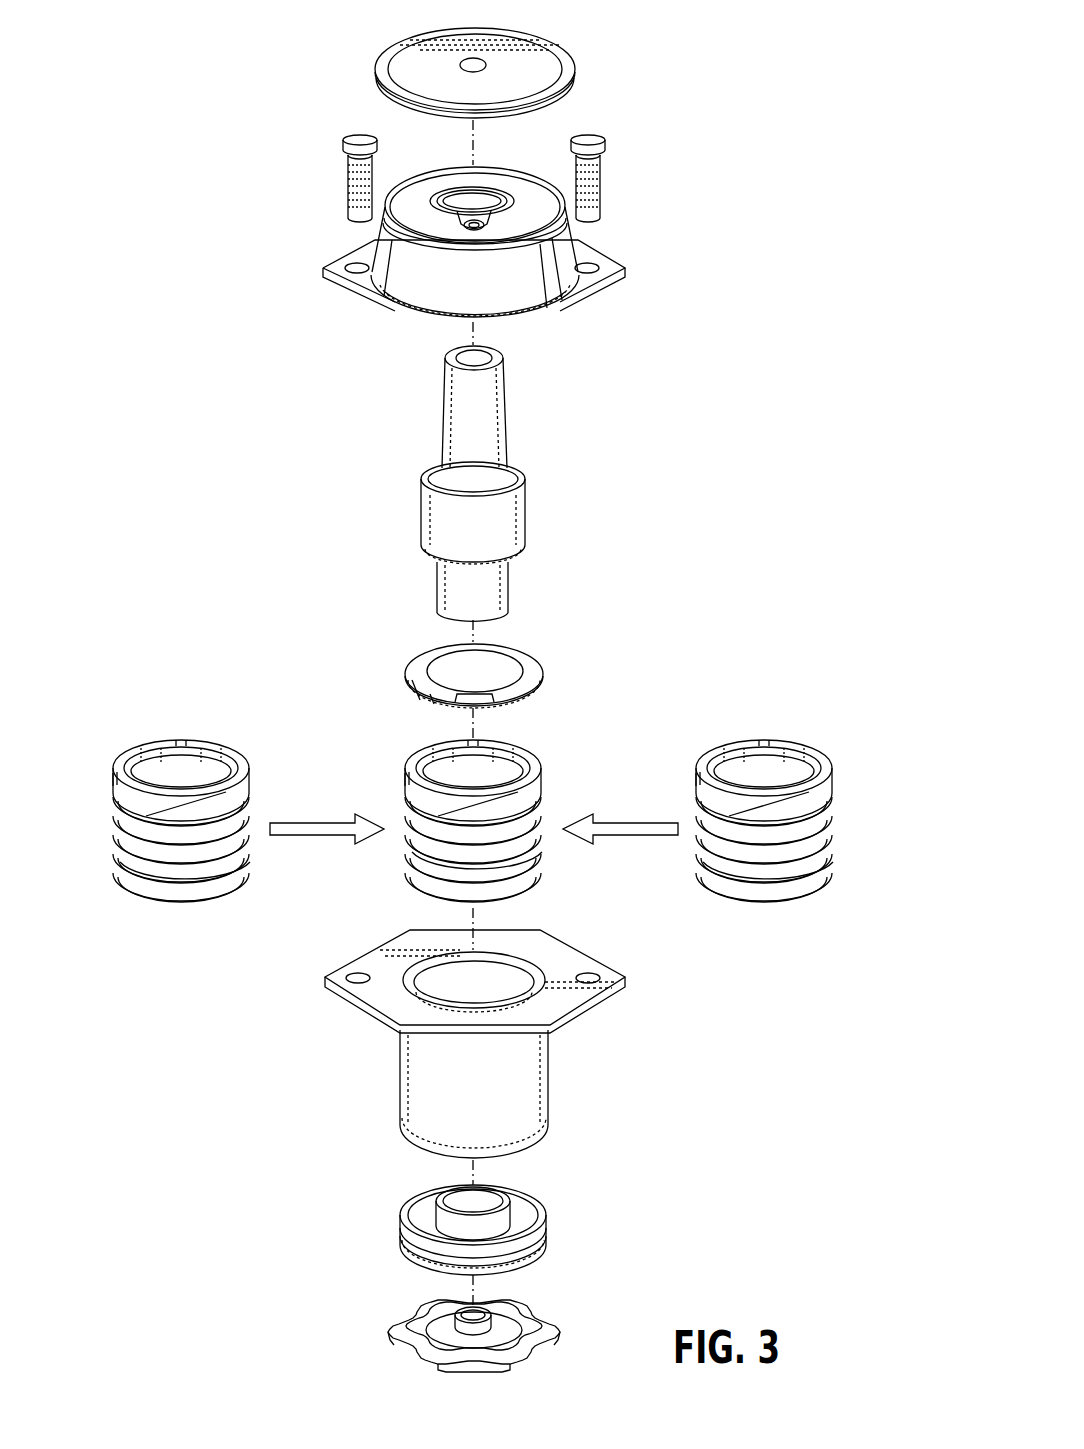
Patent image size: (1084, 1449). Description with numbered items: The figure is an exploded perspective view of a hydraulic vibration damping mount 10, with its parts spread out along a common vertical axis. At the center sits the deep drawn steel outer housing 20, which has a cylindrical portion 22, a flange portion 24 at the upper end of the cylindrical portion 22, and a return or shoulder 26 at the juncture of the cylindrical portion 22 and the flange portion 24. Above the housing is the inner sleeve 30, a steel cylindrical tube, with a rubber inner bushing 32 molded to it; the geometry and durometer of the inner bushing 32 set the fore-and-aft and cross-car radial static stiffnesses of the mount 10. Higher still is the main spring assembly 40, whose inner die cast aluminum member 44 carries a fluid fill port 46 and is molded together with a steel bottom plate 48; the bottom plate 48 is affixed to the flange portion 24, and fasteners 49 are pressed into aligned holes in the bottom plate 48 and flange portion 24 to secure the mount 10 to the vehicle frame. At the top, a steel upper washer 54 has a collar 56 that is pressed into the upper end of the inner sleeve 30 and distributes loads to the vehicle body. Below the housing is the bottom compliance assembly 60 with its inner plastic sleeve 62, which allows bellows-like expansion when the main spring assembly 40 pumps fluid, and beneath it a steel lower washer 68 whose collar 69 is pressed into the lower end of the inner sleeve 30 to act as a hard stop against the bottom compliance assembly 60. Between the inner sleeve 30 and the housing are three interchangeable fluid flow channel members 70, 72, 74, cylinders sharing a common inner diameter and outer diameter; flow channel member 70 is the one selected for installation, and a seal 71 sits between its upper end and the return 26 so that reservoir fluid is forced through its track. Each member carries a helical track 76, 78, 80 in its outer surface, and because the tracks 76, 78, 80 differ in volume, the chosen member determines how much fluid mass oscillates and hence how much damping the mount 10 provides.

The hydraulic vibration damping mount 10 is at (730, 75).
The outer housing 20 is at (451, 1024).
The cylindrical portion 22 is at (400, 1082).
The flange portion 24 is at (335, 980).
The return or shoulder 26 is at (530, 968).
The inner sleeve 30 is at (497, 356).
The inner bushing 32 is at (527, 531).
The main spring assembly 40 is at (451, 244).
The inner die cast aluminum member 44 is at (447, 194).
The fluid fill port 46 is at (481, 221).
The bottom plate 48 is at (334, 262).
The fasteners 49 is at (346, 180).
The upper washer 54 is at (392, 57).
The collar 56 is at (480, 60).
The bottom compliance assembly 60 is at (504, 1214).
The inner plastic sleeve 62 is at (497, 1199).
The lower washer 68 is at (463, 1318).
The collar 69 is at (488, 1310).
The fluid flow channel member 70 is at (532, 752).
The seal 71 is at (433, 656).
The fluid flow channel member 72 is at (243, 749).
The fluid flow channel member 74 is at (824, 752).
The track 76 is at (414, 858).
The track 78 is at (172, 870).
The track 80 is at (745, 868).